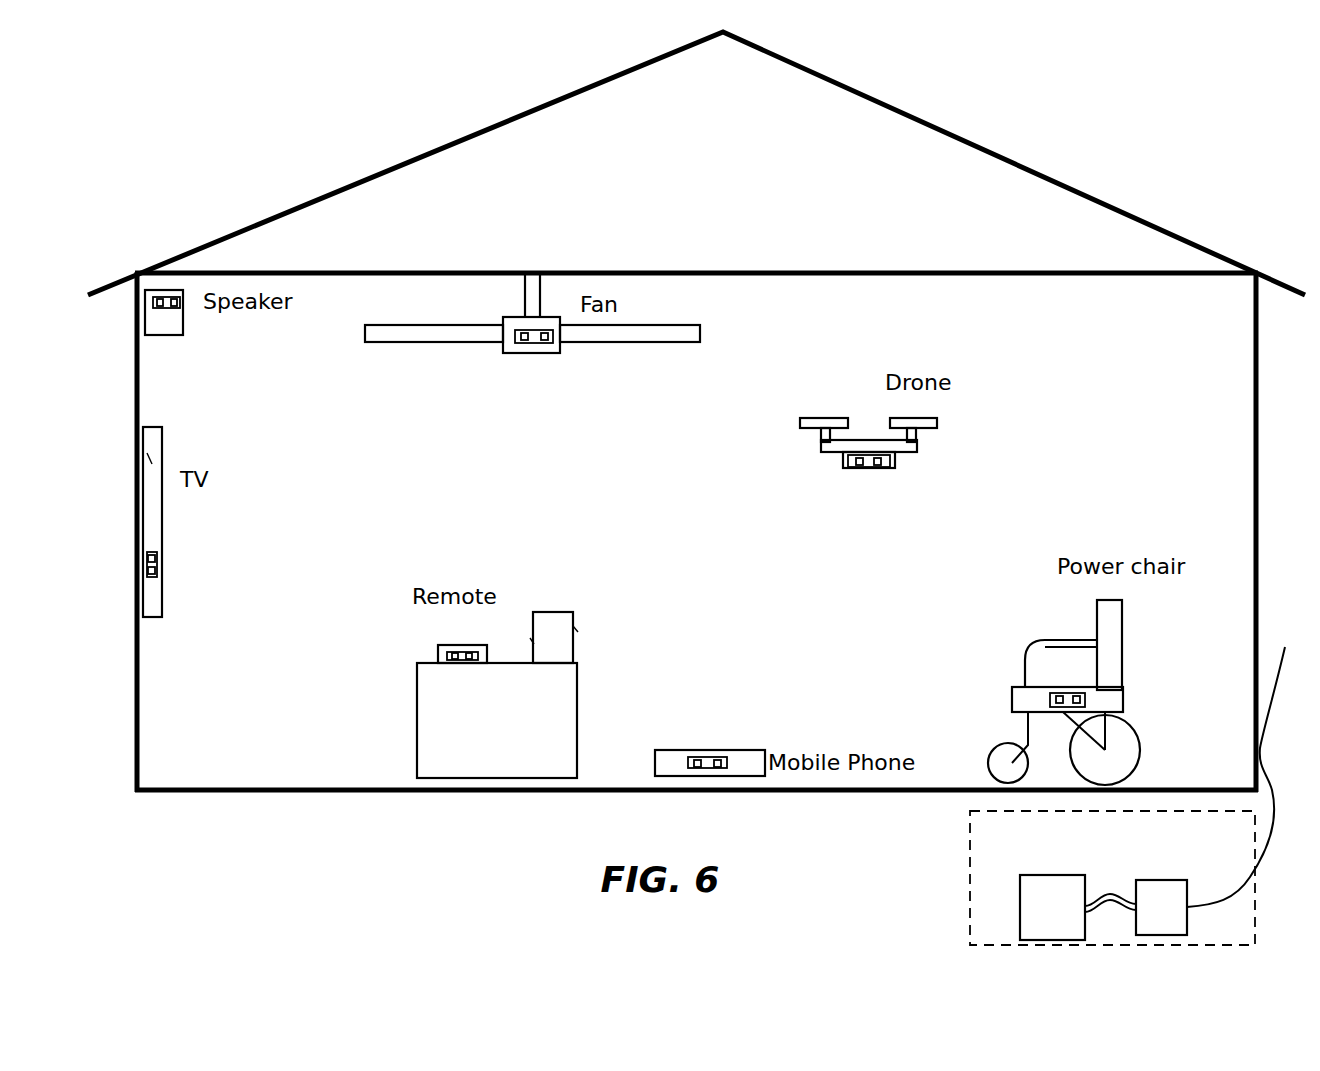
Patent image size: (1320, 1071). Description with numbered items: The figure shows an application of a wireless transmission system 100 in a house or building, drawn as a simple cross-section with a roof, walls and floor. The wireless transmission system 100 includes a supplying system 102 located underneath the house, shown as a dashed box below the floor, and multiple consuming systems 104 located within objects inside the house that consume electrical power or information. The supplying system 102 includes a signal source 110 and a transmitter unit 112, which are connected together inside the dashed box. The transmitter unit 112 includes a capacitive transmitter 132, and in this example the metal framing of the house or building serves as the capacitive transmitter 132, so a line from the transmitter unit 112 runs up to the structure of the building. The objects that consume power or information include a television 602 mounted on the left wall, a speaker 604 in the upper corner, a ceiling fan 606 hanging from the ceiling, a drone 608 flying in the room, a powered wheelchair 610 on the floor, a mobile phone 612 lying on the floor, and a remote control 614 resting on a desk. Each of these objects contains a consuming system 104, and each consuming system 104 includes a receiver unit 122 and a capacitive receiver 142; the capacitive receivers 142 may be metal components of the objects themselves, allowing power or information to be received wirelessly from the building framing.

The wireless transmission system 100 is at (238, 133).
The supplying system 102 is at (1243, 842).
The consuming system 104 is at (170, 308).
The signal source 110 is at (1038, 875).
The transmitter unit 112 is at (1160, 880).
The receiver unit 122 is at (178, 308).
The capacitive transmitter 132 is at (1250, 762).
The capacitive receiver 142 is at (159, 308).
The television 602 is at (163, 452).
The speaker 604 is at (144, 303).
The ceiling fan 606 is at (502, 344).
The drone 608 is at (822, 452).
The powered wheelchair 610 is at (1026, 657).
The mobile phone 612 is at (757, 749).
The remote control 614 is at (483, 647).